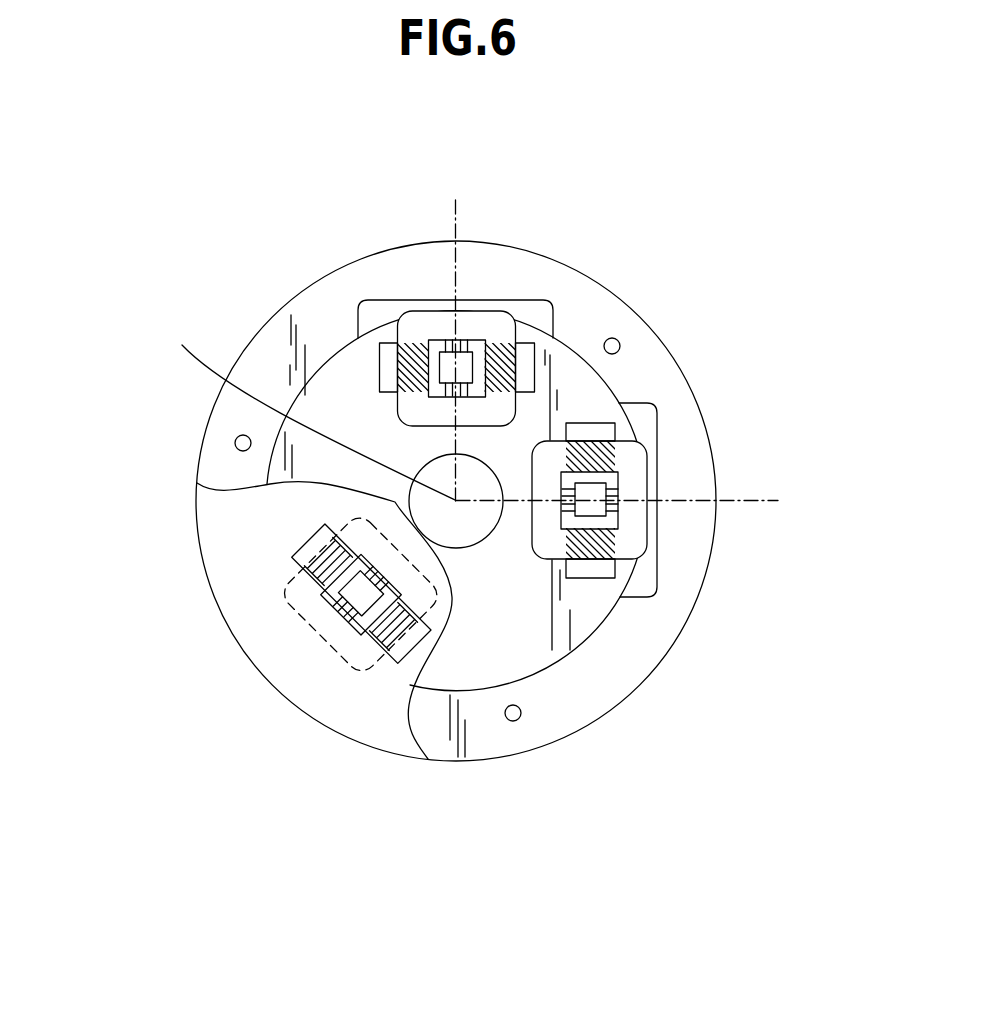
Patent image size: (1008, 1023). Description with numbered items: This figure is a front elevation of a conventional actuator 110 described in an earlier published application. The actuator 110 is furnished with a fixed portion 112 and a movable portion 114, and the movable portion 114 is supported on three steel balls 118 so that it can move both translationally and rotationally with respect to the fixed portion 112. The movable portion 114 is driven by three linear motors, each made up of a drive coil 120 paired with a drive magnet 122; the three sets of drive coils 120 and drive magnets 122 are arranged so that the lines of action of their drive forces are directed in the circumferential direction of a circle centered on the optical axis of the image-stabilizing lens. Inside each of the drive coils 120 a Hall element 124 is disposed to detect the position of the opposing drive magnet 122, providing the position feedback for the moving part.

The actuator 110 is at (183, 271).
The fixed portion 112 is at (250, 527).
The movable portion 114 is at (590, 680).
The steel balls 118 is at (620, 346).
The drive coils 120 is at (489, 450).
The drive magnets 122 is at (392, 358).
The Hall elements 124 is at (465, 358).